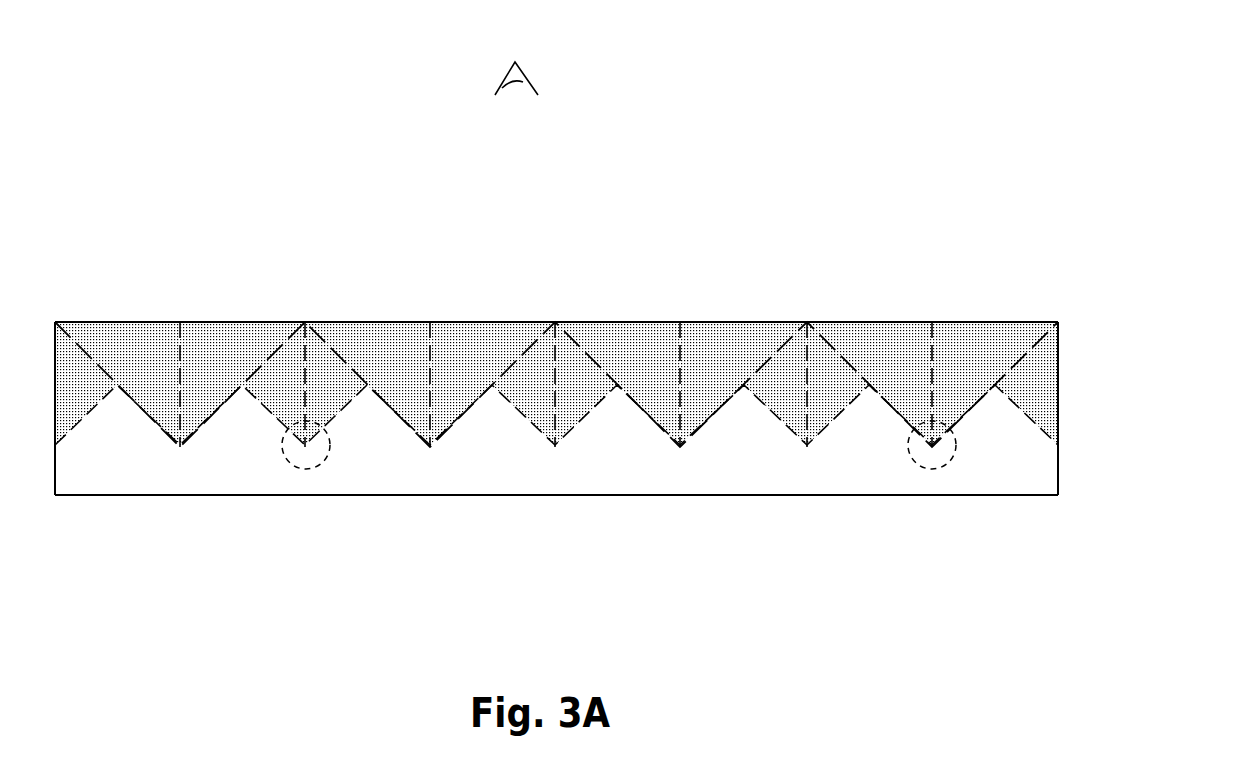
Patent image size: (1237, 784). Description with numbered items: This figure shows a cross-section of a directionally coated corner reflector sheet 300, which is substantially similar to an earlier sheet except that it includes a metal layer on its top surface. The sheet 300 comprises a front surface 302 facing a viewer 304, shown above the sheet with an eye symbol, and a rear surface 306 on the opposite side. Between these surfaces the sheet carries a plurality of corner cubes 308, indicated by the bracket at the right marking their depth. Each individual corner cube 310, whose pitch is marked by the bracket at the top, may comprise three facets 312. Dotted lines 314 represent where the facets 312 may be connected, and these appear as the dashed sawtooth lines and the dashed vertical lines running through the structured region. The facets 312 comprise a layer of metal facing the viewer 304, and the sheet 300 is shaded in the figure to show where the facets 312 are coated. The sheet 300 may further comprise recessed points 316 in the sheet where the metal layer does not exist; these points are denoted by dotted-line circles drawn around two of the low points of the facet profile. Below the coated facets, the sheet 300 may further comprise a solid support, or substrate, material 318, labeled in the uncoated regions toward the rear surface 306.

The sheet 300 is at (945, 305).
The front surface 302 is at (115, 322).
The viewer 304 is at (532, 78).
The rear surface 306 is at (675, 495).
The corner cubes 308 is at (1087, 318).
The corner cube 310 is at (557, 305).
The facets 312 is at (583, 393).
The dotted lines 314 is at (258, 372).
The recessed points 316 is at (307, 443).
The solid support material 318 is at (150, 476).